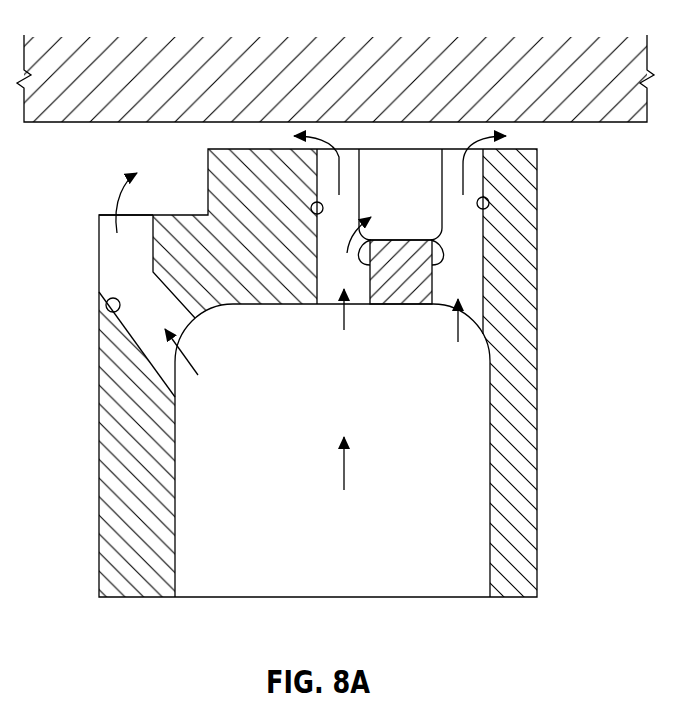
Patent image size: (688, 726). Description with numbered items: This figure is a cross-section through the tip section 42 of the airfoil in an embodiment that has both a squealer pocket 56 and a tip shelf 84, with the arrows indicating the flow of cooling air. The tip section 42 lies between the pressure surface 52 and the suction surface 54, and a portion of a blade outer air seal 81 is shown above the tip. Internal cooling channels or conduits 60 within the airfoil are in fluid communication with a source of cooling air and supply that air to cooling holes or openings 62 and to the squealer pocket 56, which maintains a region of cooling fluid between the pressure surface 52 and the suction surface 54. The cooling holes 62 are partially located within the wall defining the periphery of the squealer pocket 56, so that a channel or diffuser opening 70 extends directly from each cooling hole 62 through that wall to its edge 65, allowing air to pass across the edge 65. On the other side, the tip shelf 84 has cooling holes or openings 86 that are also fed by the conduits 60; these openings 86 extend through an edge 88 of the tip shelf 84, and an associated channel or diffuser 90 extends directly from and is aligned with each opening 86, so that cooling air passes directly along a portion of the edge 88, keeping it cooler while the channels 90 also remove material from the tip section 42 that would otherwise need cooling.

The tip section 42 is at (280, 135).
The pressure surface 52 is at (99, 440).
The suction surface 54 is at (537, 485).
The squealer pocket 56 is at (412, 165).
The internal cooling channels or conduits 60 is at (175, 577).
The cooling holes or openings 62 is at (371, 240).
The edge 65 is at (358, 152).
The channel or diffuser opening 70 is at (311, 210).
The blade outer air seal (BOAS) 81 is at (506, 122).
The tip shelf 84 is at (203, 213).
The cooling holes or openings 86 is at (100, 307).
The edge 88 is at (100, 213).
The channel or diffuser 90 is at (150, 217).